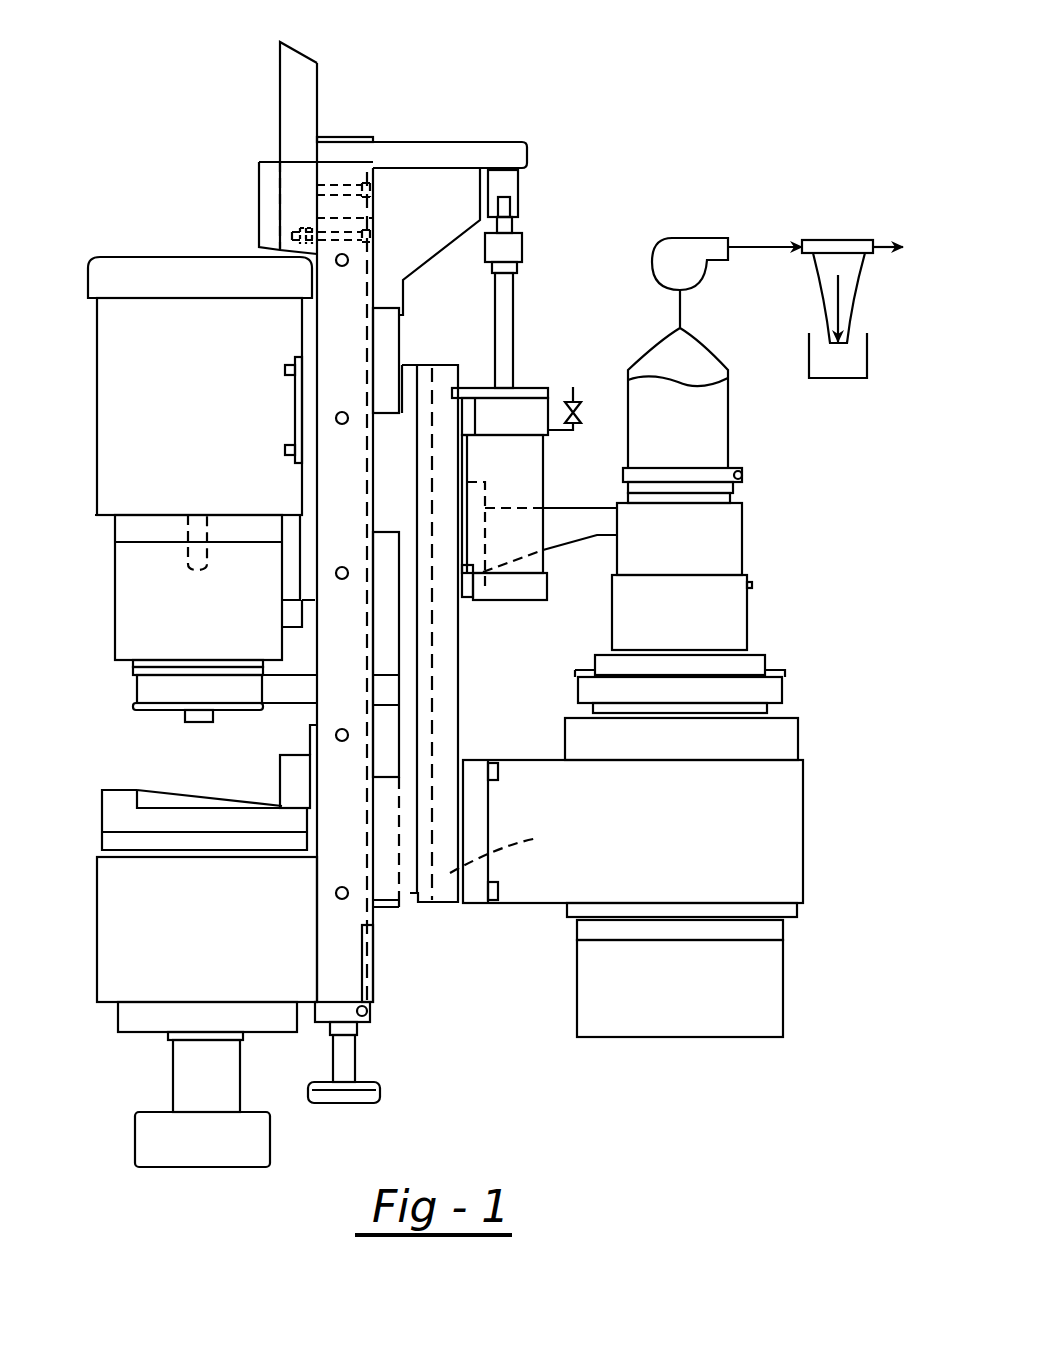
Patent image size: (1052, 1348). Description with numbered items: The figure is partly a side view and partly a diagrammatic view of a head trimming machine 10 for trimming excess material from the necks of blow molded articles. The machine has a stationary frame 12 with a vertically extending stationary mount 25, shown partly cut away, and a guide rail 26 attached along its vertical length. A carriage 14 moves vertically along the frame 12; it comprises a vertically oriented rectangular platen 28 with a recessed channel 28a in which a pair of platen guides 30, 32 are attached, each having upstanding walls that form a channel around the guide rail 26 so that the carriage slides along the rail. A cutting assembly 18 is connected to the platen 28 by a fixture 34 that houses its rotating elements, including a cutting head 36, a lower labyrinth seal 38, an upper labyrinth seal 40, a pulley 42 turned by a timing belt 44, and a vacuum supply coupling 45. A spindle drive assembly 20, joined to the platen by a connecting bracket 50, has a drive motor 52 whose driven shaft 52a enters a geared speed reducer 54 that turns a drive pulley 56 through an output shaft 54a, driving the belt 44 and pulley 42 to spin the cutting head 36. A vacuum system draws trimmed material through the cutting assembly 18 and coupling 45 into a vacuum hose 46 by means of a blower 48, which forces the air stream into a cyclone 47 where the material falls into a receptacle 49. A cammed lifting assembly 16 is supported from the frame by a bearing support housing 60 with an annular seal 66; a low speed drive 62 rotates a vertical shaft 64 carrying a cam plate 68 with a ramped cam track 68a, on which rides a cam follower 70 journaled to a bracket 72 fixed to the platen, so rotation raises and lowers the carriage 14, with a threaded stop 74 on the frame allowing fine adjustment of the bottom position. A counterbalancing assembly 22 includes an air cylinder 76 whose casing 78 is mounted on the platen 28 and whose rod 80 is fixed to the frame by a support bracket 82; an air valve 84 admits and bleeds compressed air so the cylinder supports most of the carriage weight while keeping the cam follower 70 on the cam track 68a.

The head trimming machine 10 is at (178, 90).
The frame 12 is at (247, 188).
The carriage 14 is at (450, 958).
The cammed lifting assembly 16 is at (88, 1053).
The cutting assembly 18 is at (822, 598).
The spindle drive assembly 20 is at (95, 607).
The counterbalancing assembly 22 is at (556, 258).
The stationary mount 25 is at (345, 170).
The guide rail 26 is at (392, 332).
The platen 28 is at (447, 375).
The recessed channel 28a is at (506, 843).
The platen guide 30 is at (385, 413).
The platen guide 32 is at (410, 893).
The fixture 34 is at (803, 843).
The cutting head 36 is at (785, 978).
The lower labyrinth seal 38 is at (798, 912).
The upper labyrinth seal 40 is at (800, 742).
The pulley 42 is at (780, 660).
The timing belt 44 is at (777, 690).
The vacuum supply coupling 45 is at (800, 527).
The vacuum hose 46 is at (730, 423).
The cyclone 47 is at (815, 278).
The blower 48 is at (722, 236).
The receptacle 49 is at (868, 352).
The connecting bracket 50 is at (300, 503).
The drive motor 52 is at (97, 455).
The driven shaft 52a is at (188, 543).
The geared speed reducer 54 is at (118, 580).
The output shaft 54a is at (182, 717).
The drive pulley 56 is at (140, 710).
The bearing support housing 60 is at (97, 905).
The low speed drive 62 is at (135, 1145).
The shaft 64 is at (177, 1078).
The annular seal 66 is at (118, 1012).
The cam plate 68 is at (102, 825).
The cam track 68a is at (167, 790).
The cam follower 70 is at (280, 755).
The bracket 72 is at (310, 740).
The threaded stop 74 is at (378, 1062).
The air cylinder 76 is at (572, 366).
The casing 78 is at (550, 560).
The rod 80 is at (513, 312).
The support bracket 82 is at (528, 158).
The air valve 84 is at (585, 415).